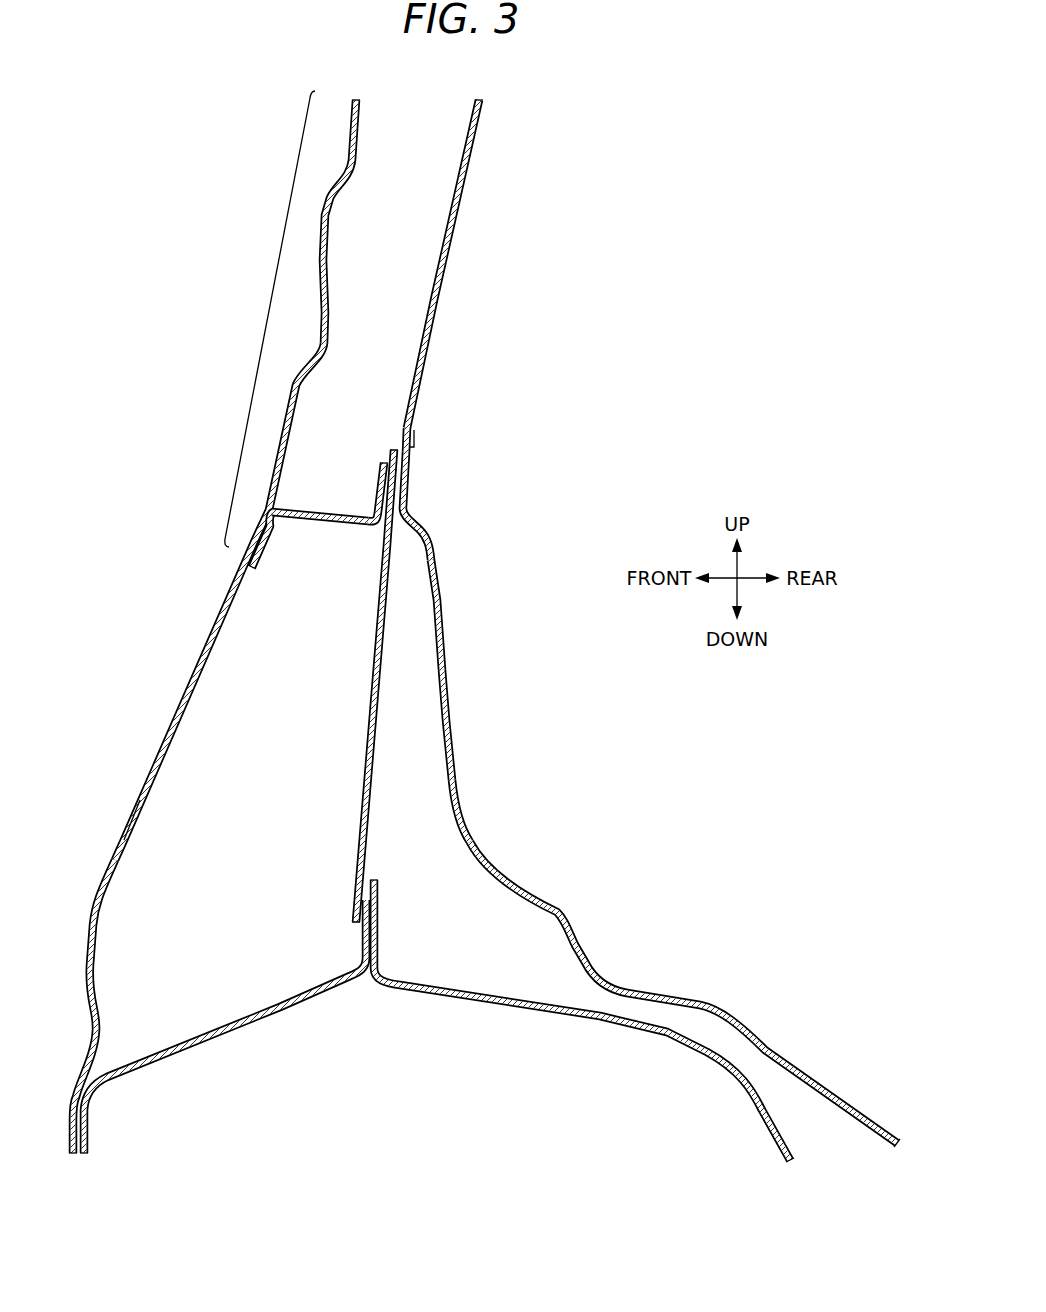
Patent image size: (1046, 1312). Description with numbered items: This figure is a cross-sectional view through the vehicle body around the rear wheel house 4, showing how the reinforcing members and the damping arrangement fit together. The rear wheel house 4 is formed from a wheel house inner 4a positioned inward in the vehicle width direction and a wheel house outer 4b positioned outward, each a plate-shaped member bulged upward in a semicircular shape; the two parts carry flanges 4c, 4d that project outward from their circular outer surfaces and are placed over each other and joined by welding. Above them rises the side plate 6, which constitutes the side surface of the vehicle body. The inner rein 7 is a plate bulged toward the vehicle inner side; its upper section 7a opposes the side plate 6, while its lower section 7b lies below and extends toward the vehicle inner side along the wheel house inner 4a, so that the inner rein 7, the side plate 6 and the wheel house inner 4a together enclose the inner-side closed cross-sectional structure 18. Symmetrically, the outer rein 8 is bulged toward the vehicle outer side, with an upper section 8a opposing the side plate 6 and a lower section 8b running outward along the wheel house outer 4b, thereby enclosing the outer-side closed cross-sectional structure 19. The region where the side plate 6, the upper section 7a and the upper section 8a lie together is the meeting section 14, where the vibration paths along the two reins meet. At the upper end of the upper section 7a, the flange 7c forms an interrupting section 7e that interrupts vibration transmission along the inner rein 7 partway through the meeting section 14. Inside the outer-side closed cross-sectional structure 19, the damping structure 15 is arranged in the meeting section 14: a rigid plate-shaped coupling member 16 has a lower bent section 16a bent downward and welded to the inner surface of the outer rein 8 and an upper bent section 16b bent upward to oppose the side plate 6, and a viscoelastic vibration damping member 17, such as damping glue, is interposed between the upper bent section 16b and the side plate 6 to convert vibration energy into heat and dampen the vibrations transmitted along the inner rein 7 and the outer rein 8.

The rear wheel house 4 is at (437, 1052).
The wheel house inner 4a is at (641, 1033).
The wheel house outer 4b is at (261, 1020).
The flange 4c is at (381, 933).
The flange 4d is at (365, 933).
The side plate 6 is at (437, 301).
The inner rein 7 is at (651, 771).
The upper section 7a is at (438, 577).
The lower section 7b is at (560, 915).
The flange 7c is at (410, 478).
The interrupting section 7e is at (412, 448).
The outer rein 8 is at (234, 602).
The upper section 8a is at (332, 208).
The lower section 8b is at (103, 878).
The meeting section 14 is at (272, 262).
The damping structure 15 is at (312, 600).
The coupling member 16 is at (316, 498).
The lower bent section 16a is at (258, 552).
The upper bent section 16b is at (384, 478).
The vibration damping member 17 is at (378, 553).
The inner-side closed cross-sectional structure 18 is at (478, 793).
The outer-side closed cross-sectional structure 19 is at (126, 786).